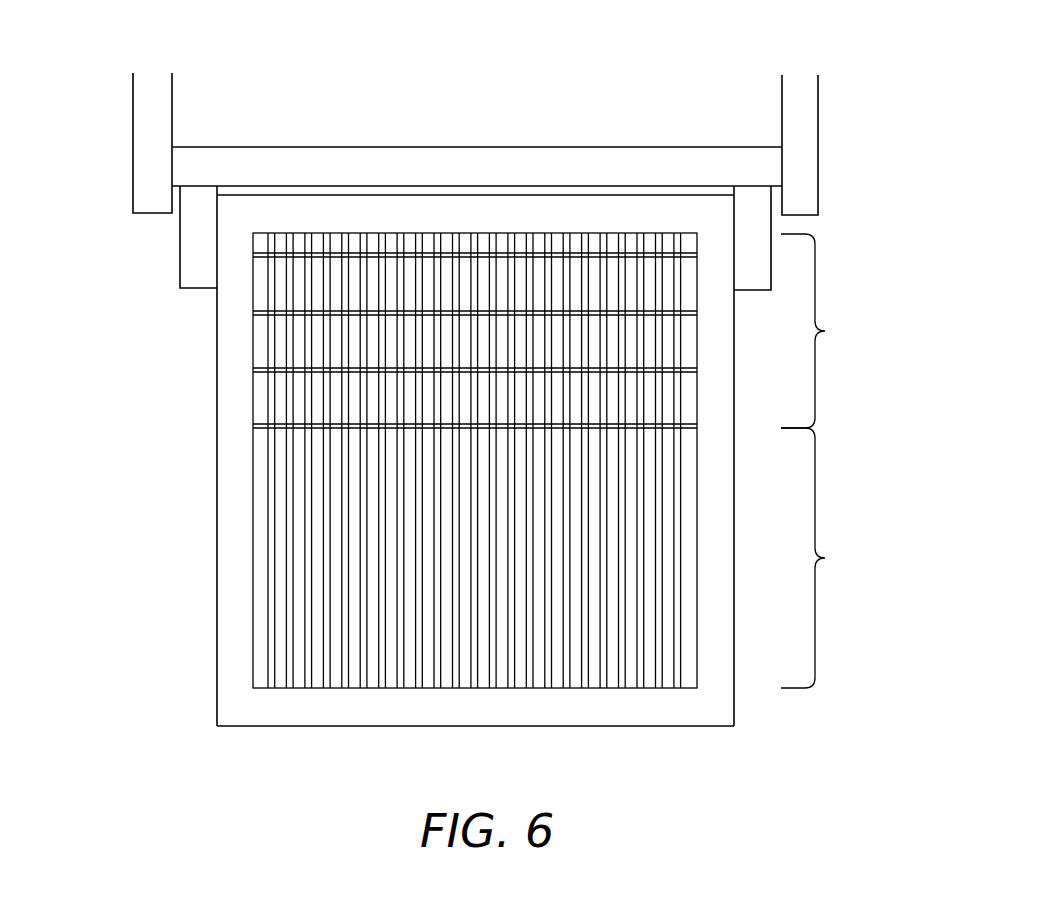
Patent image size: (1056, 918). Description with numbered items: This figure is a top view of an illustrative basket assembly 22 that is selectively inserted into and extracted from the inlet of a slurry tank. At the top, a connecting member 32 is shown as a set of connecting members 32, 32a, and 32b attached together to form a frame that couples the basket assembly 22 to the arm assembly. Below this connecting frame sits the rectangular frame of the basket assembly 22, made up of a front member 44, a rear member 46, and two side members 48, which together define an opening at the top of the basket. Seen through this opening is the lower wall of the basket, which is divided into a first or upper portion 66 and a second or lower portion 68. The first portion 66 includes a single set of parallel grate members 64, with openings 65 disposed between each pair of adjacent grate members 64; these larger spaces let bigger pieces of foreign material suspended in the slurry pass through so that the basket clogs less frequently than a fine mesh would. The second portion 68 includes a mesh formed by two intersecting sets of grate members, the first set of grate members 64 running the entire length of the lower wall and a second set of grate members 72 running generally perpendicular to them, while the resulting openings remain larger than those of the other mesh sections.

The basket assembly 22 is at (993, 740).
The connecting member 32 is at (148, 128).
The connecting member 32a is at (305, 157).
The connecting member 32b is at (193, 250).
The front member 44 is at (628, 720).
The rear member 46 is at (483, 213).
The side members 48 is at (228, 526).
The grate members 64 is at (308, 622).
The spaces 65 is at (338, 672).
The first portion 66 is at (821, 558).
The second portion 68 is at (821, 331).
The second grate members 72 is at (253, 428).